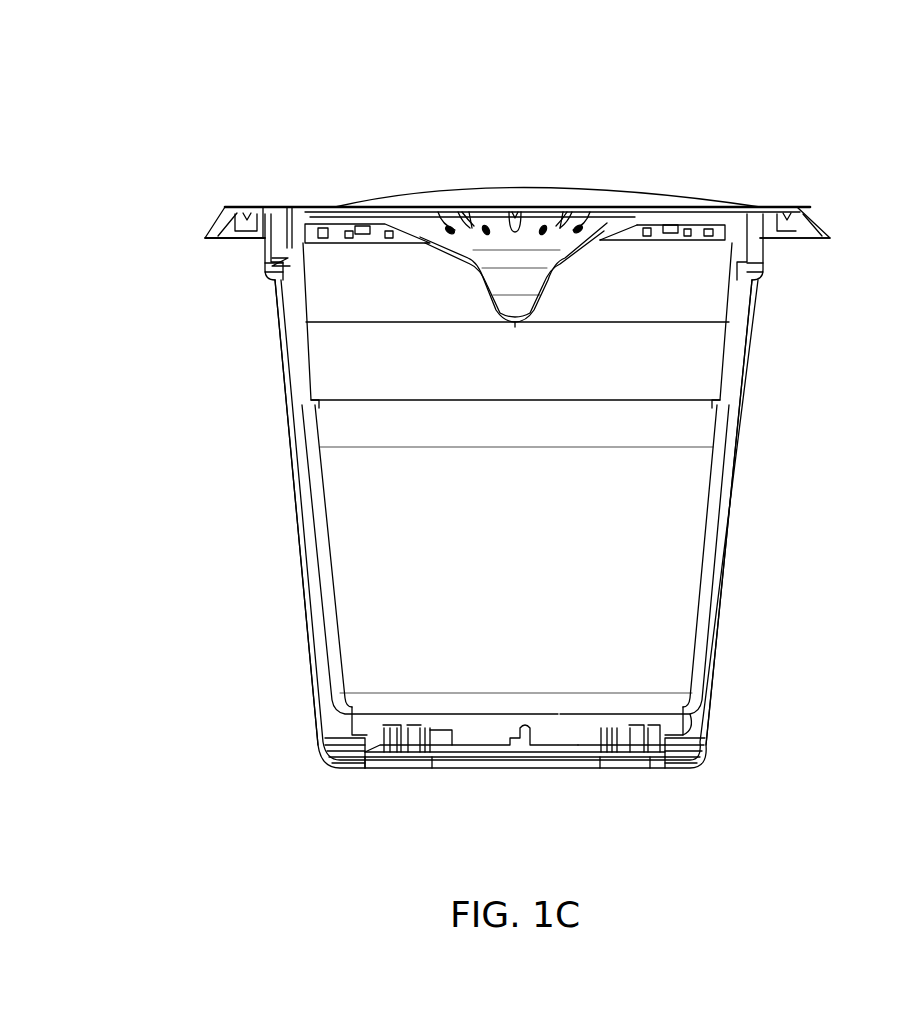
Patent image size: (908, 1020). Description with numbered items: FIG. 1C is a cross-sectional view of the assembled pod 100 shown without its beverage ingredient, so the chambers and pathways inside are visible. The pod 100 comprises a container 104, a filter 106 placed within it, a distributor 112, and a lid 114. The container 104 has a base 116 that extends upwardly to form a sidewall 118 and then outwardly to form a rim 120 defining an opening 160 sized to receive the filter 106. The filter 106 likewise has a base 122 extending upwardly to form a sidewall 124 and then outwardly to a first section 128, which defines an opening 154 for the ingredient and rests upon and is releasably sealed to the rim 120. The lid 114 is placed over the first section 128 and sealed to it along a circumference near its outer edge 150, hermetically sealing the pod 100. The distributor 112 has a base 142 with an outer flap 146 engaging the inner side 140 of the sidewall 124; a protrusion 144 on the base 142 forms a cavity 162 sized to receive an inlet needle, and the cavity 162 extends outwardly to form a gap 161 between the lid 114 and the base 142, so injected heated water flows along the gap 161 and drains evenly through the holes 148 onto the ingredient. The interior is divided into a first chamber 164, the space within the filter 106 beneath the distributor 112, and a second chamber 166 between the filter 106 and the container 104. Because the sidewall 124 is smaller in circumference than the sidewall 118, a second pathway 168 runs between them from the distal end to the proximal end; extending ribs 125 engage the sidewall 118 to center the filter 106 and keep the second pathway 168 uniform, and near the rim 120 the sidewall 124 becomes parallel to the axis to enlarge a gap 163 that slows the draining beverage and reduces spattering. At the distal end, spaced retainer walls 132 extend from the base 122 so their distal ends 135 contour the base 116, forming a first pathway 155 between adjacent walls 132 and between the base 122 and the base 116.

The pod 100 is at (530, 53).
The container 104 is at (757, 514).
The filter 106 is at (693, 478).
The distributor 112 is at (596, 258).
The lid 114 is at (430, 205).
The base 116 is at (495, 770).
The sidewall 118 is at (744, 440).
The rim 120 is at (258, 238).
The base 122 is at (696, 720).
The sidewall 124 is at (312, 413).
The extending ribs 125 is at (730, 385).
The first section 128 is at (775, 207).
The retainer wall 132 is at (346, 740).
The distal ends 135 is at (375, 768).
The inner side 140 is at (334, 460).
The base 142 is at (405, 224).
The protrusion 144 is at (513, 328).
The outer flap 146 is at (270, 232).
The holes 148 is at (486, 228).
The outer edge 150 is at (238, 207).
The opening 154 is at (272, 264).
The first pathway 155 is at (405, 725).
The opening 160 is at (752, 240).
The gap 161 is at (650, 222).
The cavity 162 is at (530, 265).
The gap 163 is at (288, 240).
The first chamber 164 is at (494, 483).
The second chamber 166 is at (716, 708).
The second pathway 168 is at (735, 590).